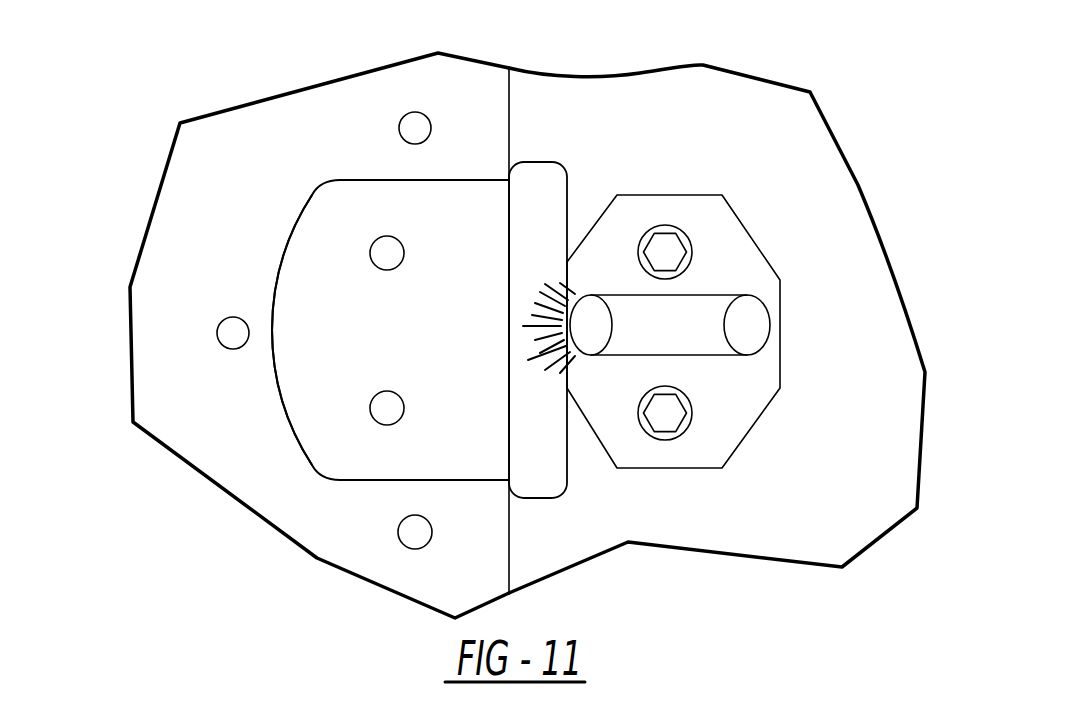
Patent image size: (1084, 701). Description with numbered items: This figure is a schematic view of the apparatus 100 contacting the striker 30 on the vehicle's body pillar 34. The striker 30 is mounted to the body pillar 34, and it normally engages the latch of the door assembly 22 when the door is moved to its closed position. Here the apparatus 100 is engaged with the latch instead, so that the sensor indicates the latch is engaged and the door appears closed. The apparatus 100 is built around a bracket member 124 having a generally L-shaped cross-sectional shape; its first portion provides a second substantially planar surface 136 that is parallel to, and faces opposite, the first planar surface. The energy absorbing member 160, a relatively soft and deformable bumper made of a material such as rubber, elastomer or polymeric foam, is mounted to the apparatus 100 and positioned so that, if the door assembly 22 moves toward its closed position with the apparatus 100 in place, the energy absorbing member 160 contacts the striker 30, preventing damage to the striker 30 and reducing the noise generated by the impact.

The door assembly 22 is at (357, 118).
The body pillar 34 is at (737, 130).
The energy absorbing member 160 is at (540, 192).
The striker 30 is at (698, 318).
The apparatus 100 is at (322, 288).
The second substantially planar surface 136 is at (315, 328).
The bracket member 124 is at (323, 390).